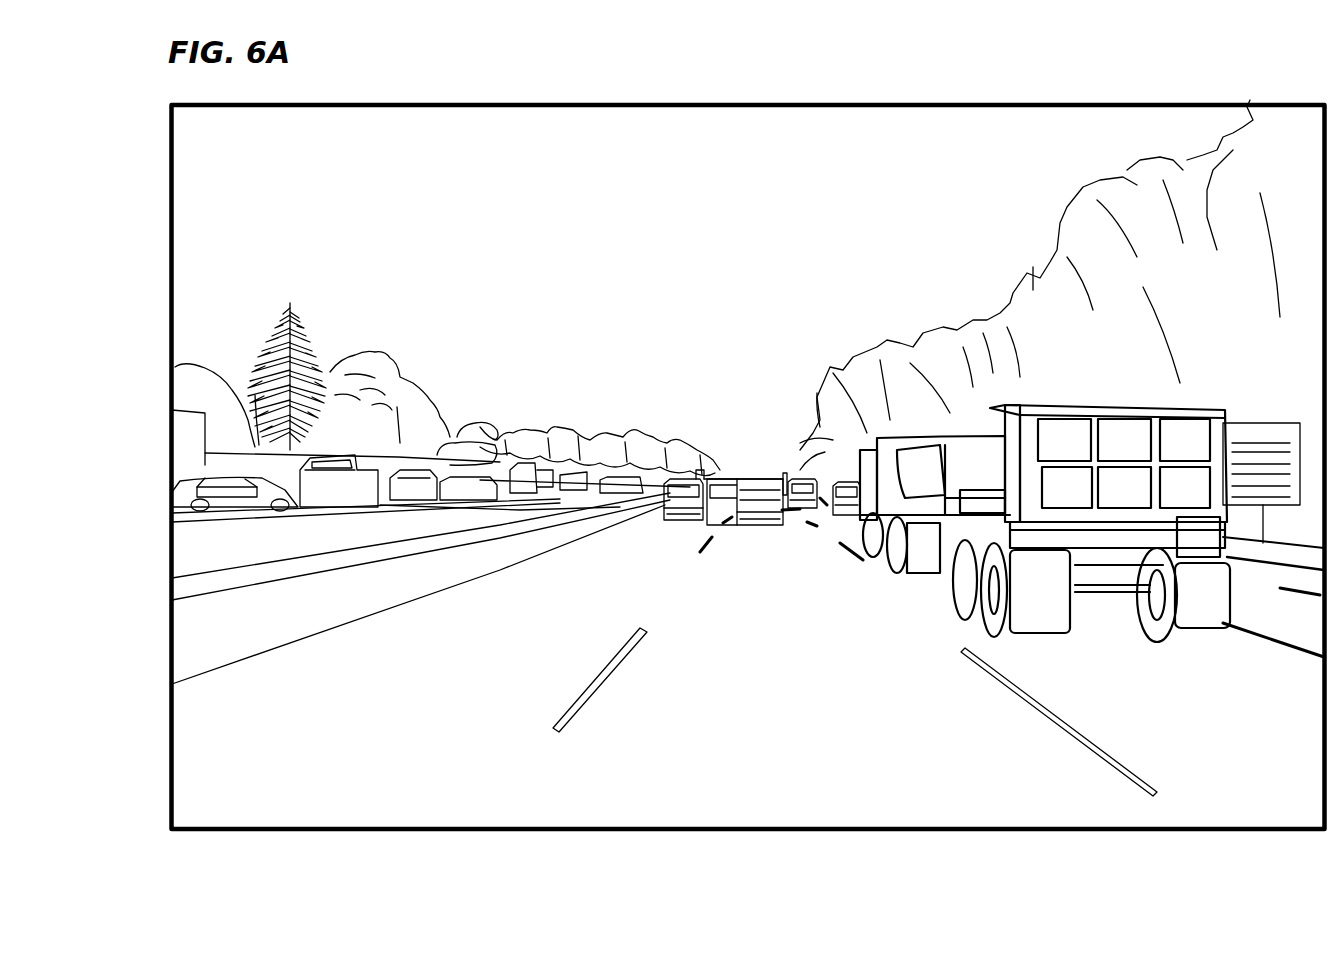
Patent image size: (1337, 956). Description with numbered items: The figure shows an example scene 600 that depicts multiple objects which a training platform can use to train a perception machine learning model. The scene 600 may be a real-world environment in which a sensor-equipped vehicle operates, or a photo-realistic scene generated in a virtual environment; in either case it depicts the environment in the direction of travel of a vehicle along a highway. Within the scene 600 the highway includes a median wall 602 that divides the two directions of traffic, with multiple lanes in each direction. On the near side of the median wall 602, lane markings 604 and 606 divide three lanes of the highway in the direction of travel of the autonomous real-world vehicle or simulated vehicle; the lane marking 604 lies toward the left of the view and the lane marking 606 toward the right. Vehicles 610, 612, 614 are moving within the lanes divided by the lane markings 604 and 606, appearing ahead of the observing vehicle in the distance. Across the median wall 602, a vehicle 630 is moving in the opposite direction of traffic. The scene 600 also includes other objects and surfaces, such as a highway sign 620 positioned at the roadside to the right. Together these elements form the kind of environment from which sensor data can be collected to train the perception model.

The scene 600 is at (723, 84).
The median wall 602 is at (183, 545).
The lane marking 604 is at (626, 640).
The lane marking 606 is at (965, 650).
The vehicle 610 is at (666, 520).
The vehicle 612 is at (745, 530).
The vehicle 614 is at (857, 513).
The highway sign 620 is at (1243, 423).
The vehicle 630 is at (180, 480).